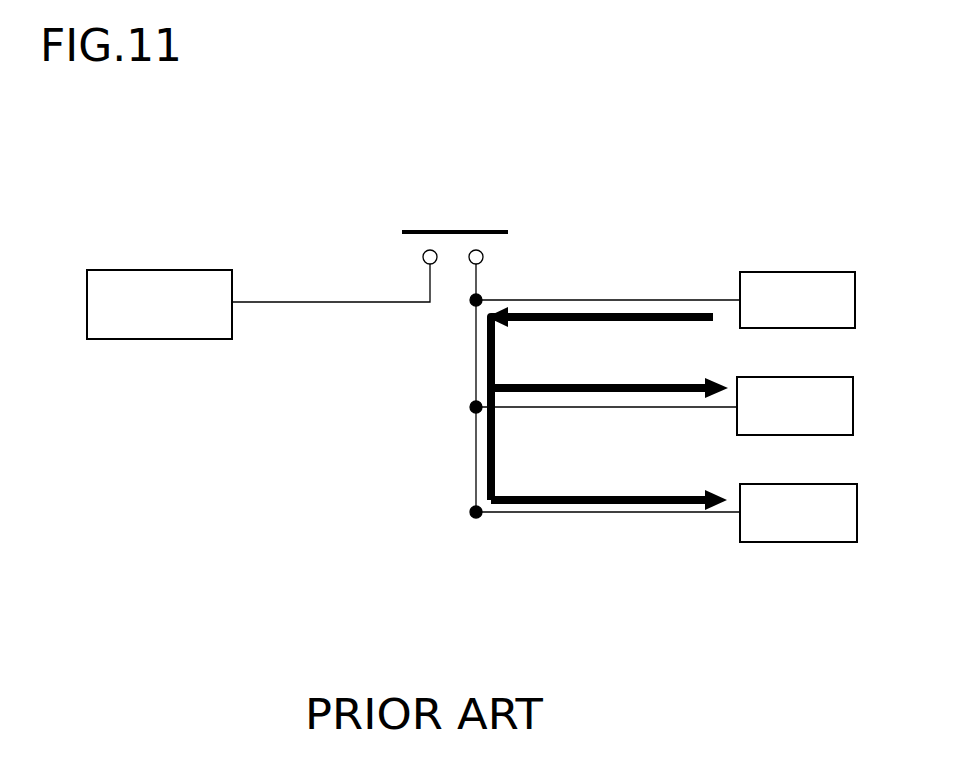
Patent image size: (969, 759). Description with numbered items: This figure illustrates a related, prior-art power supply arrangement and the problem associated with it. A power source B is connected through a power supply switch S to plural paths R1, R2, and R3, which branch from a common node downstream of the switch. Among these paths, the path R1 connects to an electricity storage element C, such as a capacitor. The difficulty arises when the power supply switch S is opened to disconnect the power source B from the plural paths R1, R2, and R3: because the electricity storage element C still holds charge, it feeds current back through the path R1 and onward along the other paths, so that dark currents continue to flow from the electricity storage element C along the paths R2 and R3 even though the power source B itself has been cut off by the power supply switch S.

The power source B is at (158, 270).
The power supply switch S is at (453, 215).
The electricity storage element C is at (758, 272).
The path R1 is at (535, 287).
The path R2 is at (547, 417).
The path R3 is at (562, 523).